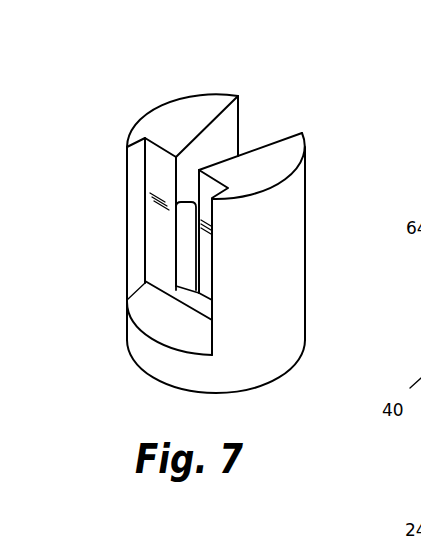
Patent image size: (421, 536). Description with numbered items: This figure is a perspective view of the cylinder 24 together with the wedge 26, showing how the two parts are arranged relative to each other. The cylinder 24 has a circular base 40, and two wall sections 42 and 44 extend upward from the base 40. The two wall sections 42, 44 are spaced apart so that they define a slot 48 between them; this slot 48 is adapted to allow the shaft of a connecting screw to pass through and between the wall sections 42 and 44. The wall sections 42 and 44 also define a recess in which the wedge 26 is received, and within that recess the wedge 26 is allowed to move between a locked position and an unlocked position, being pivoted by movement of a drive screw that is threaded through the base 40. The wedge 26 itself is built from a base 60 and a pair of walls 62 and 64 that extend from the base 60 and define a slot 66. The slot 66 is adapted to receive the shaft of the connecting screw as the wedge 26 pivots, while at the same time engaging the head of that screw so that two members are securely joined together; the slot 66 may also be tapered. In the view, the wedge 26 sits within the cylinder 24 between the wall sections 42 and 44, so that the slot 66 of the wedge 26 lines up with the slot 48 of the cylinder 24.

The cylinder 24 is at (268, 408).
The wedge 26 is at (147, 241).
The circular base 40 is at (158, 358).
The wall section 42 is at (277, 270).
The wall section 44 is at (127, 180).
The slot 48 is at (256, 130).
The base 60 is at (167, 285).
The wall 62 is at (203, 270).
The wall 64 is at (157, 218).
The slot 66 is at (182, 249).